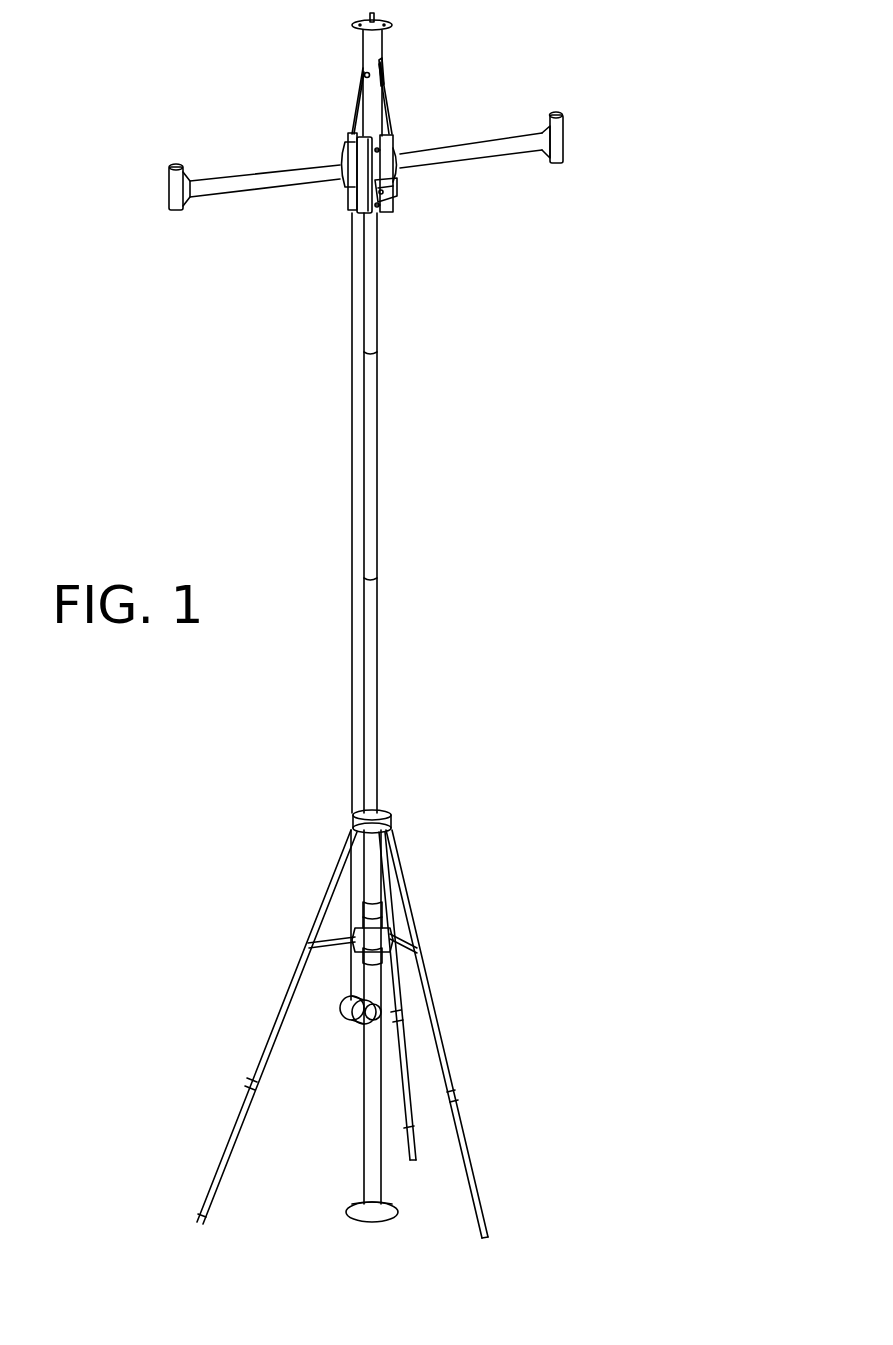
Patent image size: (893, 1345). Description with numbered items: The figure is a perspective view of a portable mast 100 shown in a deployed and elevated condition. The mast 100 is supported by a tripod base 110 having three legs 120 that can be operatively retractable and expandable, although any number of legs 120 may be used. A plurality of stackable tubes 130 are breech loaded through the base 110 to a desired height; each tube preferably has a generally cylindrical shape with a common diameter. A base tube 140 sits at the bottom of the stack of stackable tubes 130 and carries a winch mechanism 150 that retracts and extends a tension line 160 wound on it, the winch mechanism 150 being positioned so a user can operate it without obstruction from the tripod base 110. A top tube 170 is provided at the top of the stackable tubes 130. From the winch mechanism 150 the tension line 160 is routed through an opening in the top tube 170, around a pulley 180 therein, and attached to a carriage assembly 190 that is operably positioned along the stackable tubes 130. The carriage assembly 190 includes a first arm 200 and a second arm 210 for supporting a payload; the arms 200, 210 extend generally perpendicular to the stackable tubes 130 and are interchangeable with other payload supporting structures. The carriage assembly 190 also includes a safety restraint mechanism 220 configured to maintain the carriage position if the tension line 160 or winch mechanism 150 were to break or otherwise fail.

The portable mast 100 is at (155, 107).
The tripod base 110 is at (336, 878).
The legs 120 is at (430, 1007).
The stackable tubes 130 is at (372, 660).
The base tube 140 is at (372, 1165).
The winch mechanism 150 is at (355, 1012).
The tension line 160 is at (352, 746).
The top tube 170 is at (376, 48).
The pulley 180 is at (361, 72).
The carriage assembly 190 is at (394, 212).
The first arm 200 is at (266, 180).
The second arm 210 is at (505, 140).
The safety restraint mechanism 220 is at (395, 188).